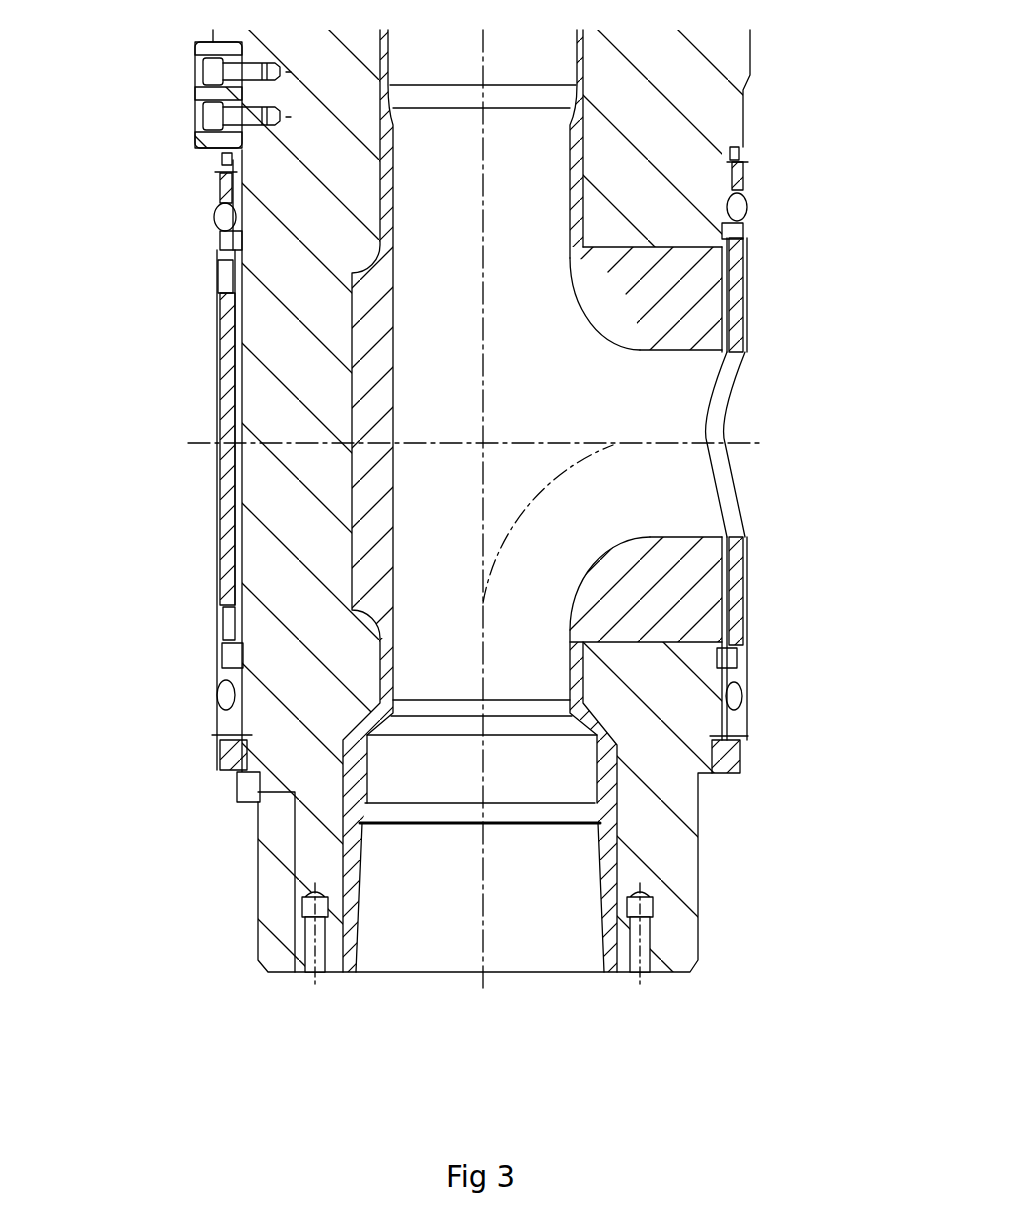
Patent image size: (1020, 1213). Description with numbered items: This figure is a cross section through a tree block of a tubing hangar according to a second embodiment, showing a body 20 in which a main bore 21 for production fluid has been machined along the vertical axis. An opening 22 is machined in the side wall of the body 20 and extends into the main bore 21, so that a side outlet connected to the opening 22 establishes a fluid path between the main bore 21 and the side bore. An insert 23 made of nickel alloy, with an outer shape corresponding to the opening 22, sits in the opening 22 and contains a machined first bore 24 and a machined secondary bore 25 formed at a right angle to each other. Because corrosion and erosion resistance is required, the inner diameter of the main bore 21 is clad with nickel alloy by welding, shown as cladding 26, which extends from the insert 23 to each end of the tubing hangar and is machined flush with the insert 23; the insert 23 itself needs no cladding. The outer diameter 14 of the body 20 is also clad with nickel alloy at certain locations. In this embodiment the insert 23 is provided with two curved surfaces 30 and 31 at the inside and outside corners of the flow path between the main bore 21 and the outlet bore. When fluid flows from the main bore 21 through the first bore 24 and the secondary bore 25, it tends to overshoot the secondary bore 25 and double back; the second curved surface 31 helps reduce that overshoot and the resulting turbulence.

The outer diameter 14 is at (237, 368).
The body 20 is at (665, 852).
The main bore 21 is at (407, 913).
The opening 22 is at (640, 488).
The insert 23 is at (663, 613).
The first bore 24 is at (425, 483).
The secondary bore 25 is at (638, 402).
The nickel alloy cladding 26 is at (580, 124).
The curved surface 30 is at (605, 557).
The second curved surface 31 is at (607, 330).